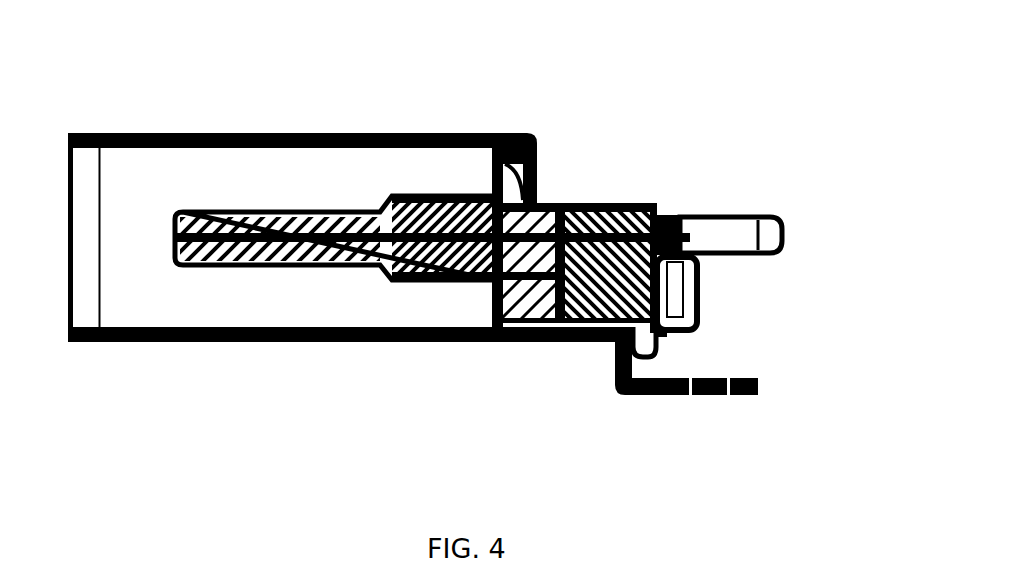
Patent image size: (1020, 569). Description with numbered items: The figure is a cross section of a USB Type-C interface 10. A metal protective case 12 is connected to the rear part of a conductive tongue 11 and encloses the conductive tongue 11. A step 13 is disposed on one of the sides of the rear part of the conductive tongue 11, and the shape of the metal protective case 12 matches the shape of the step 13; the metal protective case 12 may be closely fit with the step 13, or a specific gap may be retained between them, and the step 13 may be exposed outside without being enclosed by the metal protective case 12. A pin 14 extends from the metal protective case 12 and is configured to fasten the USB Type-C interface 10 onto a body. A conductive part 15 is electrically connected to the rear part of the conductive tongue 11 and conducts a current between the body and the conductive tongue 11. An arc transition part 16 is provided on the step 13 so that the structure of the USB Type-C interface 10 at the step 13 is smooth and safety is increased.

The USB Type-C interface 10 is at (152, 407).
The conductive tongue 11 is at (237, 222).
The metal protective case 12 is at (332, 137).
The step 13 is at (594, 170).
The pin 14 is at (648, 390).
The conductive part 15 is at (735, 238).
The arc transition part 16 is at (539, 138).